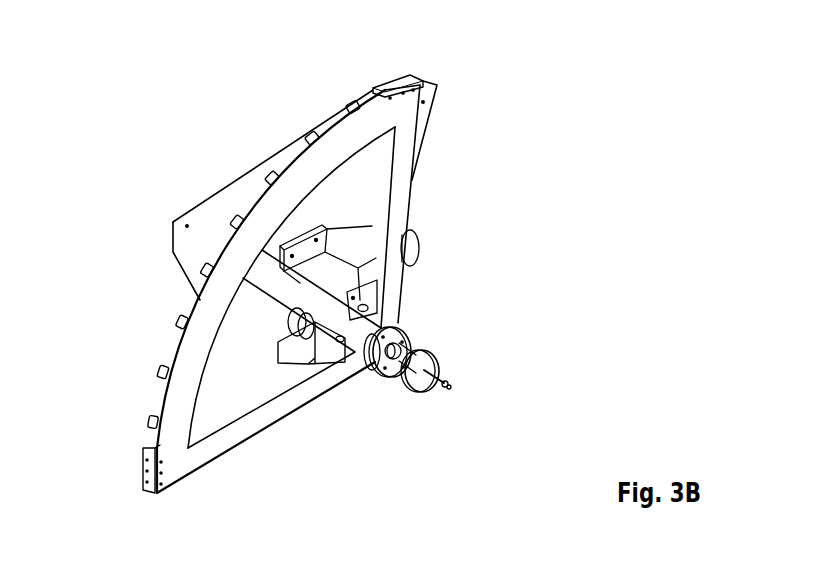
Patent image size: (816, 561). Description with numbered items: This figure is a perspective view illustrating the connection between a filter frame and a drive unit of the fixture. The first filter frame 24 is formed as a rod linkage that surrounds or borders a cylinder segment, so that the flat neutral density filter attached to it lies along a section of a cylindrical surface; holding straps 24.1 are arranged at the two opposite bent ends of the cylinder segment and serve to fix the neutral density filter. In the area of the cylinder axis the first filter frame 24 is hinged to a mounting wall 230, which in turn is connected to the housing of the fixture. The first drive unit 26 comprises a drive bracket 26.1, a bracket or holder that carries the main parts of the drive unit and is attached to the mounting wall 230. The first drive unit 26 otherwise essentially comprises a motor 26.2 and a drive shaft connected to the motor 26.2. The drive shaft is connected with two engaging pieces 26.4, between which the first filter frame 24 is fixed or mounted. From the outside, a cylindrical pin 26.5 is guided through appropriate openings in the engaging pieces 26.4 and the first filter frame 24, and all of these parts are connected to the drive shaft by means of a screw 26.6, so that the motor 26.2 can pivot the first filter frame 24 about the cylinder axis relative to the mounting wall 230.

The first filter frame 24 is at (328, 146).
The mounting wall 230 is at (210, 214).
The holding straps 24.1 is at (172, 310).
The first drive unit 26 is at (474, 245).
The drive bracket 26.1 is at (308, 352).
The motor 26.2 is at (412, 258).
The engaging pieces 26.4 is at (386, 378).
The cylindrical pin 26.5 is at (406, 380).
The screw 26.6 is at (452, 390).